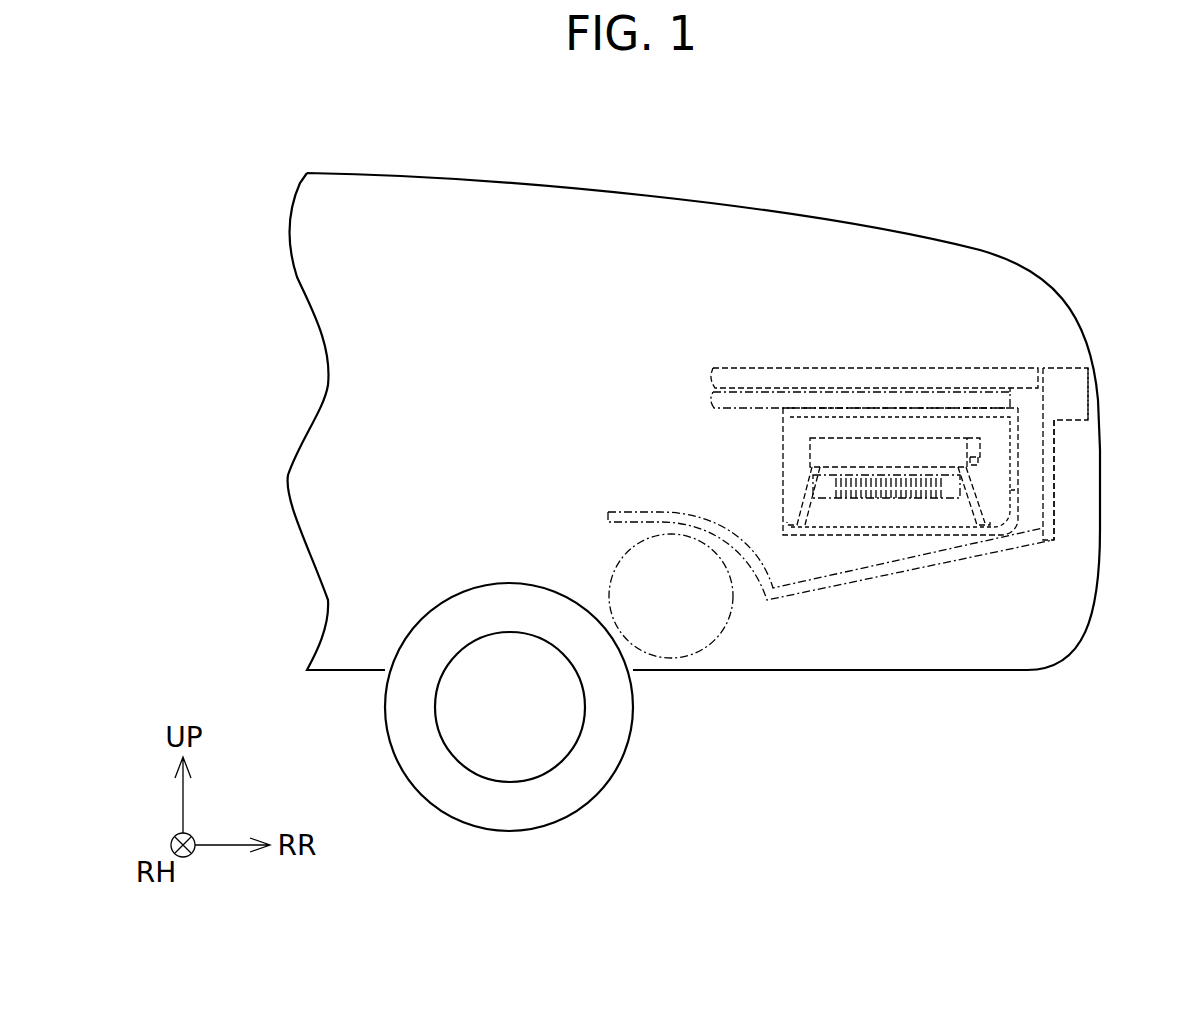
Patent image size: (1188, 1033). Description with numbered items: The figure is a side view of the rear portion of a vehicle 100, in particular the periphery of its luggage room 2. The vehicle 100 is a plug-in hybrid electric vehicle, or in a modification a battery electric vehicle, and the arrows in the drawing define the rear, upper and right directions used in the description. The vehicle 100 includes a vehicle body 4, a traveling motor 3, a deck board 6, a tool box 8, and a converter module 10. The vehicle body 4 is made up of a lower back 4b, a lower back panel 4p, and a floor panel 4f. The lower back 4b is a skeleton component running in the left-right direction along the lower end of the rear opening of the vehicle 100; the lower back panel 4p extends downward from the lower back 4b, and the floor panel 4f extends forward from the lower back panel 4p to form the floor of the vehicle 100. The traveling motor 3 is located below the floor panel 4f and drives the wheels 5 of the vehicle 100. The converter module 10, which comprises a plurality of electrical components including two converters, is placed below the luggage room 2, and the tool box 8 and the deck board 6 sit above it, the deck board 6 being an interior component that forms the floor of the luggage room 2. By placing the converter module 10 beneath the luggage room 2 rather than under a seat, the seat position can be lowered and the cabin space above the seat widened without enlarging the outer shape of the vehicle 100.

The vehicle 100 is at (614, 400).
The luggage room 2 is at (733, 245).
The traveling motor 3 is at (692, 642).
The vehicle body 4 is at (890, 517).
The lower back 4b is at (1085, 395).
The lower back panel 4p is at (1047, 480).
The floor panel 4f is at (910, 560).
The wheels 5 is at (582, 795).
The deck board 6 is at (850, 375).
The tool box 8 is at (892, 397).
The converter module 10 is at (1028, 505).